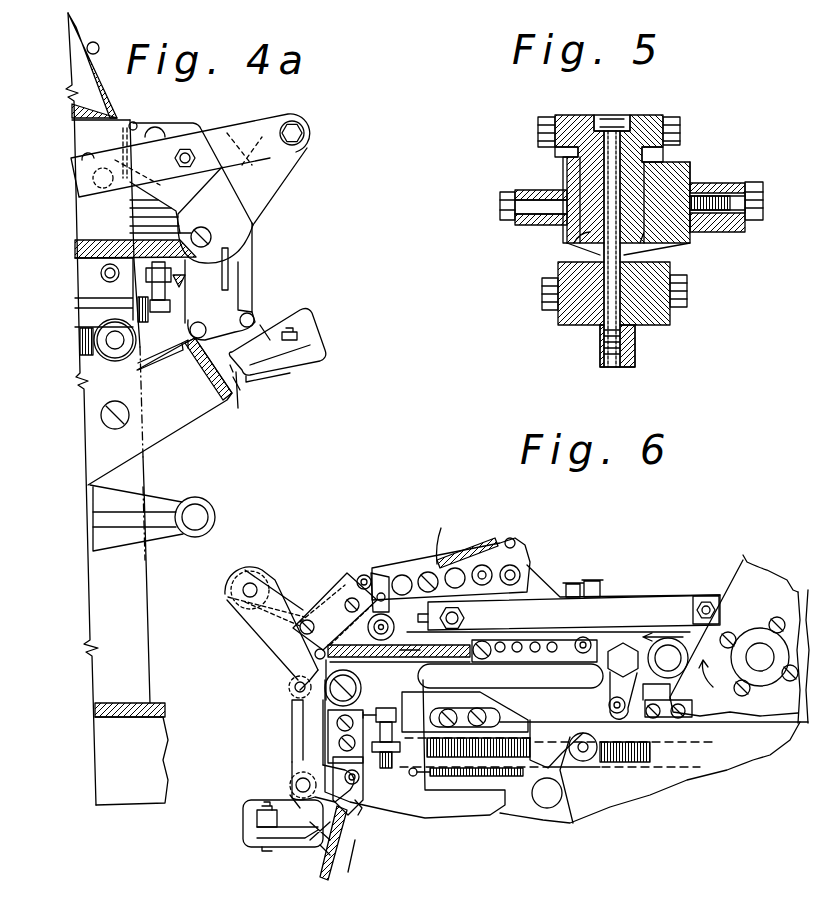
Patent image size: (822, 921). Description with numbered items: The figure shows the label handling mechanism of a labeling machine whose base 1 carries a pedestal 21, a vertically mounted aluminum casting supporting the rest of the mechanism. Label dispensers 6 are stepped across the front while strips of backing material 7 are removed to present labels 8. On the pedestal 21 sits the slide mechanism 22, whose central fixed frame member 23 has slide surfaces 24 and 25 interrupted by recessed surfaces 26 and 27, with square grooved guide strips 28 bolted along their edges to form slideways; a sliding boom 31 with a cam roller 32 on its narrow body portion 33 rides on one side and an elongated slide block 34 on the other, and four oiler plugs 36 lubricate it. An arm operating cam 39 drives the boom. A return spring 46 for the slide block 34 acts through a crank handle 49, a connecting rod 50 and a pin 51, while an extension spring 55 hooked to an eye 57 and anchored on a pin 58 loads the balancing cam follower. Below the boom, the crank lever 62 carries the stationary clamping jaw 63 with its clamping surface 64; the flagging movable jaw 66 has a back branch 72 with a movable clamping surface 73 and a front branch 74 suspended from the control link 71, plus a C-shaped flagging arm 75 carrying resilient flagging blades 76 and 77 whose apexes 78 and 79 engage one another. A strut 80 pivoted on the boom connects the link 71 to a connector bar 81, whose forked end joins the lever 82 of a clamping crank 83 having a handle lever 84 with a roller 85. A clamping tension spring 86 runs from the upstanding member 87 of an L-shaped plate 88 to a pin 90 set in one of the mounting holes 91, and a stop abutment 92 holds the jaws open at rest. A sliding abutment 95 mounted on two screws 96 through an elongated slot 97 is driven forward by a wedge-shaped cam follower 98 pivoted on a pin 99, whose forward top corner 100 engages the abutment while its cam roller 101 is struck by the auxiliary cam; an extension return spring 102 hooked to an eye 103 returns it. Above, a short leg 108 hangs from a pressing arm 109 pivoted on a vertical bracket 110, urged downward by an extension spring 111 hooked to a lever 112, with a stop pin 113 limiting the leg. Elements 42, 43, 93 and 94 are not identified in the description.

In FIG. 4A, the base 1 is at (100, 700).
In FIG. 6, the label dispenser 6 is at (323, 884).
In FIG. 6, the backing material strip 7 is at (352, 850).
In FIG. 4A, the label 8 is at (235, 405).
In FIG. 6, the label 8 is at (356, 815).
In FIG. 5, the pedestal 21 is at (602, 354).
In FIG. 6, the pedestal 21 is at (752, 758).
In FIG. 5, the slide mechanism 22 is at (524, 111).
In FIG. 5, the central fixed frame member 23 is at (628, 114).
In FIG. 5, the slide surface 24 is at (570, 153).
In FIG. 5, the slide surface 25 is at (684, 165).
In FIG. 5, the recessed surface 26 is at (585, 242).
In FIG. 5, the recessed surface 27 is at (672, 250).
In FIG. 4A, the guide strip 28 is at (74, 271).
In FIG. 5, the guide strip 28 is at (565, 114).
In FIG. 6, the guide strip 28 is at (800, 590).
In FIG. 4A, the sliding boom 31 is at (103, 275).
In FIG. 5, the sliding boom 31 is at (702, 178).
In FIG. 6, the sliding boom 31 is at (795, 606).
In FIG. 5, the cam roller 32 is at (752, 180).
In FIG. 6, the cam roller 32 is at (674, 640).
In FIG. 6, the body portion 33 is at (663, 620).
In FIG. 5, the slide block 34 is at (563, 176).
In FIG. 6, the oiler plug 36 is at (592, 578).
In FIG. 6, the arm operating cam 39 is at (740, 548).
In FIG. 4A, the spring 42 is at (80, 312).
In FIG. 6, the spring 42 is at (655, 758).
In FIG. 4A, the spring plunger 43 is at (168, 304).
In FIG. 6, the spring plunger 43 is at (388, 770).
In FIG. 4A, the return spring 46 is at (73, 250).
In FIG. 4A, the handle 49 is at (304, 158).
In FIG. 6, the handle 49 is at (236, 608).
In FIG. 4A, the connecting rod 50 is at (258, 124).
In FIG. 5, the connecting rod 50 is at (518, 196).
In FIG. 6, the connecting rod 50 is at (283, 580).
In FIG. 4A, the pin 51 is at (304, 124).
In FIG. 6, the pin 51 is at (252, 582).
In FIG. 4A, the extension spring 55 is at (106, 340).
In FIG. 5, the eye 57 is at (545, 236).
In FIG. 4A, the pin 58 is at (82, 352).
In FIG. 4A, the crank lever 62 is at (186, 312).
In FIG. 6, the crank lever 62 is at (338, 760).
In FIG. 6, the stationary label clamping jaw 63 is at (360, 772).
In FIG. 6, the label clamping surface 64 is at (362, 806).
In FIG. 6, the flagging movable jaw 66 is at (235, 806).
In FIG. 4A, the control link 71 is at (258, 282).
In FIG. 6, the control link 71 is at (292, 746).
In FIG. 4A, the back branch 72 is at (210, 322).
In FIG. 6, the back branch 72 is at (320, 778).
In FIG. 4A, the movable clamping surface 73 is at (204, 382).
In FIG. 6, the movable clamping surface 73 is at (340, 798).
In FIG. 4A, the front branch 74 is at (254, 312).
In FIG. 4A, the flagging arm 75 is at (312, 322).
In FIG. 6, the flagging arm 75 is at (243, 822).
In FIG. 4A, the upper flagging blade 76 is at (280, 372).
In FIG. 6, the upper flagging blade 76 is at (265, 808).
In FIG. 4A, the lower flagging blade 77 is at (286, 388).
In FIG. 6, the lower flagging blade 77 is at (280, 850).
In FIG. 4A, the apex 78 is at (262, 330).
In FIG. 6, the apex 78 is at (296, 800).
In FIG. 4A, the apex 79 is at (245, 386).
In FIG. 6, the apex 79 is at (328, 850).
In FIG. 6, the strut member 80 is at (296, 674).
In FIG. 6, the connector bar 81 is at (545, 640).
In FIG. 6, the lever 82 is at (594, 636).
In FIG. 6, the clamping crank 83 is at (624, 642).
In FIG. 6, the handle lever 84 is at (620, 762).
In FIG. 6, the roller 85 is at (610, 700).
In FIG. 6, the clamping tension spring 86 is at (446, 662).
In FIG. 6, the upstanding member 87 is at (290, 698).
In FIG. 4A, the L-shaped plate 88 is at (229, 265).
In FIG. 6, the L-shaped plate 88 is at (292, 727).
In FIG. 6, the pin 90 is at (484, 644).
In FIG. 6, the mounting hole 91 is at (514, 654).
In FIG. 6, the stop abutment 92 is at (634, 720).
In FIG. 4A, the plate 93 is at (130, 207).
In FIG. 6, the plate 93 is at (348, 590).
In FIG. 4A, the screw 94 is at (190, 234).
In FIG. 6, the screw 94 is at (305, 618).
In FIG. 6, the sliding abutment 95 is at (415, 682).
In FIG. 6, the screw 96 is at (474, 709).
In FIG. 6, the elongated slot 97 is at (443, 710).
In FIG. 6, the cam follower 98 is at (573, 810).
In FIG. 6, the pin 99 is at (545, 806).
In FIG. 6, the forward top corner 100 is at (536, 722).
In FIG. 6, the cam roller 101 is at (584, 762).
In FIG. 6, the extension return spring 102 is at (506, 795).
In FIG. 6, the eye 103 is at (426, 797).
In FIG. 6, the short leg 108 is at (382, 588).
In FIG. 4A, the pressing arm 109 is at (182, 120).
In FIG. 6, the pressing arm 109 is at (398, 566).
In FIG. 4A, the vertical bracket 110 is at (135, 122).
In FIG. 6, the vertical bracket 110 is at (530, 568).
In FIG. 4A, the extension spring 111 is at (72, 106).
In FIG. 6, the extension spring 111 is at (478, 536).
In FIG. 6, the lever 112 is at (512, 537).
In FIG. 6, the stop pin 113 is at (365, 575).